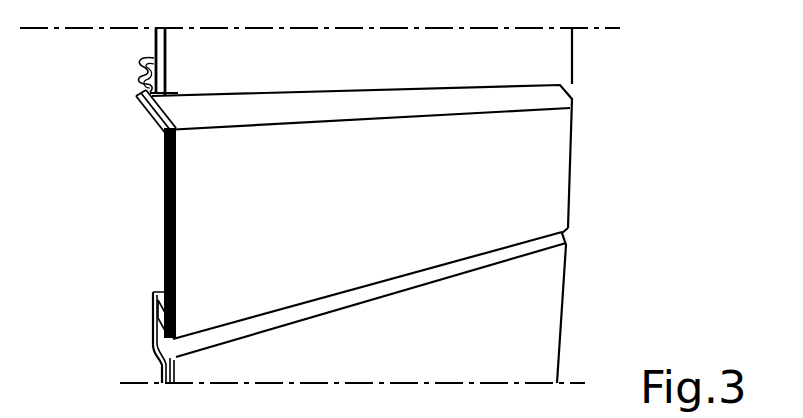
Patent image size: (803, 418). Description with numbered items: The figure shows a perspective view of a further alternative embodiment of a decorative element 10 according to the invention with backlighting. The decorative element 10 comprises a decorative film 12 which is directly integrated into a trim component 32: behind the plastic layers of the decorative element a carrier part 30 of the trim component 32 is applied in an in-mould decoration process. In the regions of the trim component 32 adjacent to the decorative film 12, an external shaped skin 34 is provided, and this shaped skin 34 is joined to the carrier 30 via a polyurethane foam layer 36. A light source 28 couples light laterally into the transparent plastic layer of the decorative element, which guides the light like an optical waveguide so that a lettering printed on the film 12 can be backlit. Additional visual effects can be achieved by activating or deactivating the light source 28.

The decorative element 10 is at (600, 152).
The film 12 is at (555, 197).
The light source 28 is at (138, 98).
The carrier part 30 is at (156, 50).
The trim component 32 is at (617, 257).
The external shaped skin 34 is at (558, 60).
The polyurethane foam layer 36 is at (142, 72).